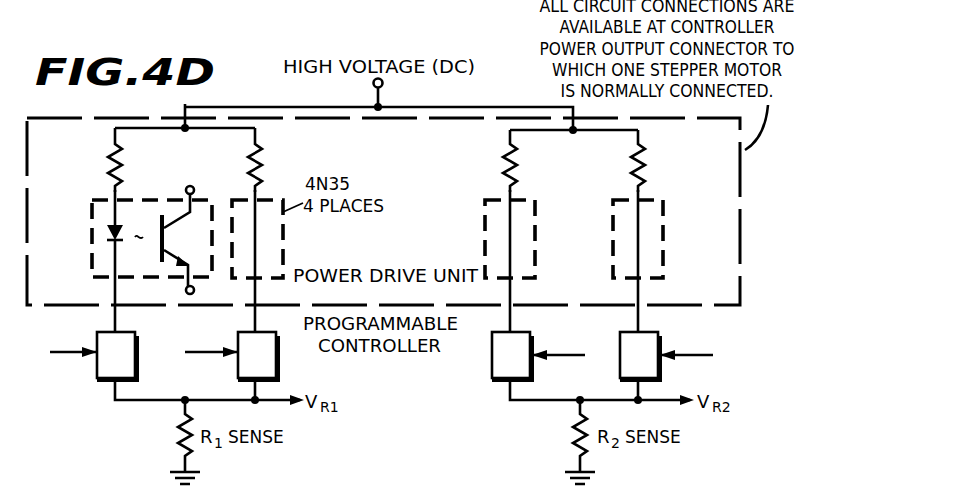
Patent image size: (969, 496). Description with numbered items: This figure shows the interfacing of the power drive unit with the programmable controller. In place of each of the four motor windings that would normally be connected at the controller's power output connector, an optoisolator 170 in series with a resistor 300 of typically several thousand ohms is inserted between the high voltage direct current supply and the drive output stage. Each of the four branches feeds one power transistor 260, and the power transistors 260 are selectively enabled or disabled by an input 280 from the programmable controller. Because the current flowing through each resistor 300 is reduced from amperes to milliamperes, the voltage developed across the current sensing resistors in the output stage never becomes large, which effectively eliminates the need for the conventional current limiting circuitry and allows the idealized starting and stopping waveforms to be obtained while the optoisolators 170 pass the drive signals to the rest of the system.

The resistor 300 is at (106, 165).
The optoisolator 170 is at (90, 250).
The power transistor 260 is at (139, 367).
The input 280 is at (62, 348).